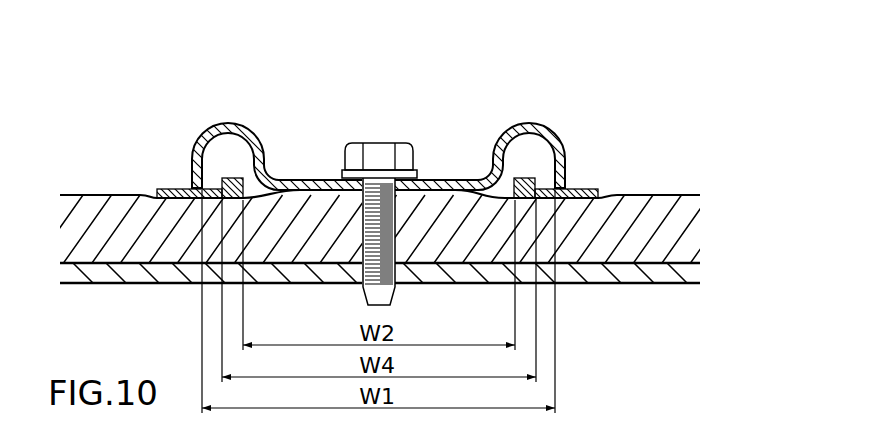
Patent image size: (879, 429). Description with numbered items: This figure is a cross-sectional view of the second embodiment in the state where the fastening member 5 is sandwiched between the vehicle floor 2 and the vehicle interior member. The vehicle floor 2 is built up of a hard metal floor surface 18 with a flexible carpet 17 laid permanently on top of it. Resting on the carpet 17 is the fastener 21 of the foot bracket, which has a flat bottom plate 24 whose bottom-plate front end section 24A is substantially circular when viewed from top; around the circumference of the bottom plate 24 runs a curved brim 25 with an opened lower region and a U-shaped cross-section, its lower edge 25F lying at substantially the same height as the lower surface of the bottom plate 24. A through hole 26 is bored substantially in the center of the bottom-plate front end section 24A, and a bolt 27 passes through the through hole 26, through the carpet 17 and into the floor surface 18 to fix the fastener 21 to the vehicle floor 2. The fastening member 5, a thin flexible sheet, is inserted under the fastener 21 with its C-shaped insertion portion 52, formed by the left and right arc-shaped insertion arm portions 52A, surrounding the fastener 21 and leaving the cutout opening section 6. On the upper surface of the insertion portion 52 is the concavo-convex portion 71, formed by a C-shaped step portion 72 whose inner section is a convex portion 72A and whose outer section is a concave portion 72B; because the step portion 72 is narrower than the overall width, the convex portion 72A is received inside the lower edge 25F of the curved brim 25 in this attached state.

The vehicle floor 2 is at (393, 218).
The carpet 17 is at (698, 236).
The floor surface 18 is at (693, 272).
The bottom plate 24 is at (378, 110).
The bottom-plate front end section 24A is at (317, 180).
The fastener 21 is at (521, 123).
The cutout opening section 6 is at (557, 150).
The concavo-convex portion 71 is at (263, 152).
The step portion 72 is at (203, 188).
The convex portion 72A is at (582, 186).
The concave portion 72B is at (593, 189).
The insertion portion 52 is at (414, 137).
The insertion arm portion 52A is at (600, 192).
The curved brim 25 is at (222, 175).
The lower edge 25F is at (187, 188).
The fastening member 5 is at (598, 189).
The bolt 27 is at (400, 179).
The through hole 26 is at (396, 192).